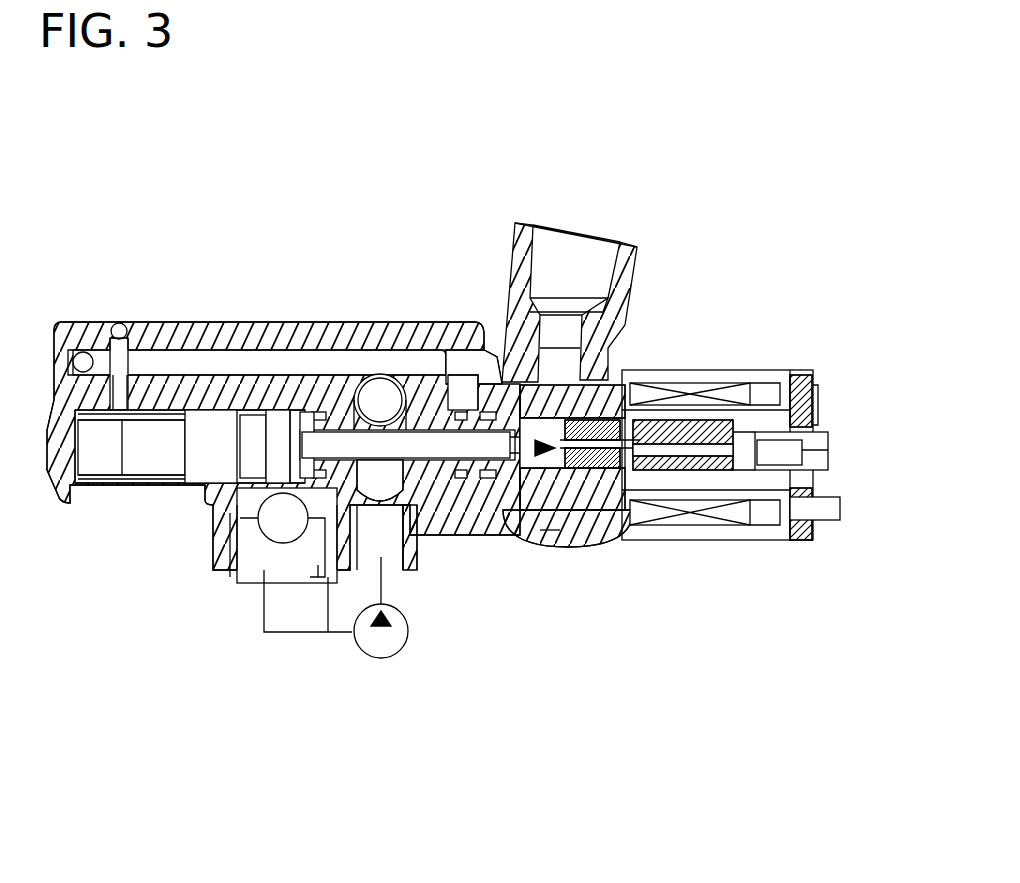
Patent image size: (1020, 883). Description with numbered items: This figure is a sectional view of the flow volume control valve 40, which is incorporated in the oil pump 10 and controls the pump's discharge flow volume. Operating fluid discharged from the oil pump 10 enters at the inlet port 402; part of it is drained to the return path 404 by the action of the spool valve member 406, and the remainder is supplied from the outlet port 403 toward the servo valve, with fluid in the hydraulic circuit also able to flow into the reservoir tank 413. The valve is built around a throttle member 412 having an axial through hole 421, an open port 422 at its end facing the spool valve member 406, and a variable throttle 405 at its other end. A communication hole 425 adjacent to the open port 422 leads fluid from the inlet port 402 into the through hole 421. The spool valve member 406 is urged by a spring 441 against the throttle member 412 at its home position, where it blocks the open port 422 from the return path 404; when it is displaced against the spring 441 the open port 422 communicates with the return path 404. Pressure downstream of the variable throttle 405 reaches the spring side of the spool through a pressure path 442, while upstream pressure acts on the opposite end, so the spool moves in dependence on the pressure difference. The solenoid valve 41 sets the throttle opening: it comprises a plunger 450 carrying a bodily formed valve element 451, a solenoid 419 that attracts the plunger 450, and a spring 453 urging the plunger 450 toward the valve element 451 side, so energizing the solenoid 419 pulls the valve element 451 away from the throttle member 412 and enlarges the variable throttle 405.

The flow volume control valve 40 is at (696, 254).
The outlet port 403 is at (575, 268).
The pressure path 442 is at (170, 365).
The spool valve member 406 is at (213, 433).
The communication hole 425 is at (318, 445).
The throttle member 412 is at (363, 385).
The through hole 421 is at (417, 445).
The variable throttle 405 is at (548, 425).
The plunger 450 is at (670, 405).
The spring 453 is at (800, 425).
The valve element 451 is at (550, 530).
The solenoid valve 41 is at (722, 530).
The solenoid 419 is at (663, 530).
The spring 441 is at (150, 482).
The return path 404 is at (243, 538).
The open port 422 is at (292, 545).
The reservoir tank 413 is at (330, 640).
The inlet port 402 is at (393, 550).
The oil pump 10 is at (379, 659).